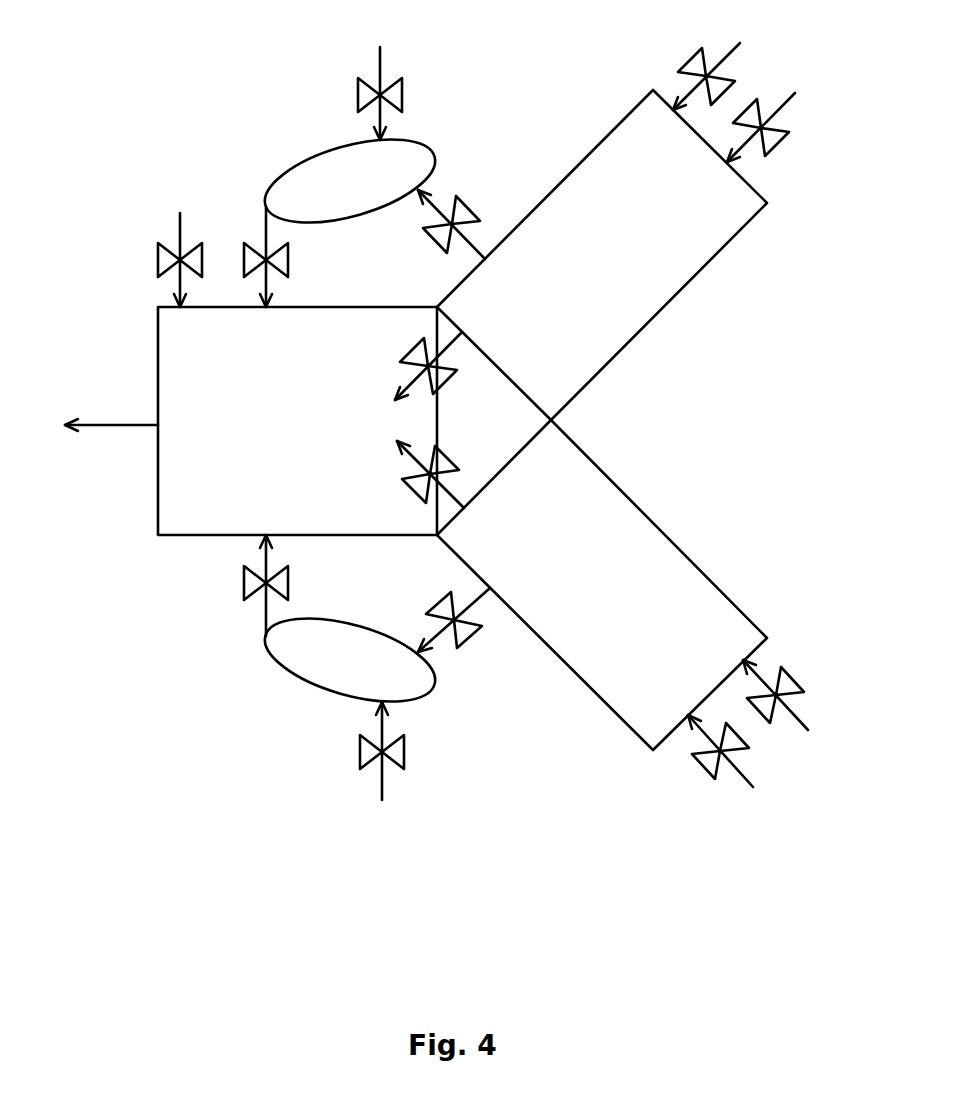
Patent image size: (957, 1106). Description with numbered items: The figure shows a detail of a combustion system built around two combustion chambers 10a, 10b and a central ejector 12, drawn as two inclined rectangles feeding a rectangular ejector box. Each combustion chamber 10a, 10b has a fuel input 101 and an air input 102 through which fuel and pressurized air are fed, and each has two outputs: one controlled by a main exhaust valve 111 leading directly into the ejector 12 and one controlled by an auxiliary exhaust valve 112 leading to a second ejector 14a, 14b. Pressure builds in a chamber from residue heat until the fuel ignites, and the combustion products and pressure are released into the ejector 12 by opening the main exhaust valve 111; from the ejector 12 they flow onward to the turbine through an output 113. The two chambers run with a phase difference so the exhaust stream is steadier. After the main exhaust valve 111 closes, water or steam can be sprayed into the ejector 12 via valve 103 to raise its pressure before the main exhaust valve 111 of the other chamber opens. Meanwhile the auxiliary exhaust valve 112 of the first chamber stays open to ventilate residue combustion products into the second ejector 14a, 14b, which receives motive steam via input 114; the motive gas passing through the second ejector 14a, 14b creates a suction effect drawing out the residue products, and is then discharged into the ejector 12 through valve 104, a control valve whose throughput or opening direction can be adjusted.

The ejector 12 is at (173, 518).
The combustion chamber 10a is at (628, 127).
The combustion chamber 10b is at (640, 735).
The second ejector 14a is at (300, 172).
The second ejector 14b is at (333, 693).
The fuel input 101 is at (683, 62).
The air input 102 is at (755, 100).
The valve 103 is at (158, 258).
The valve 104 is at (288, 267).
The main exhaust valve 111 is at (422, 343).
The auxiliary exhaust valve 112 is at (423, 228).
The output 113 is at (138, 423).
The input 114 is at (355, 98).